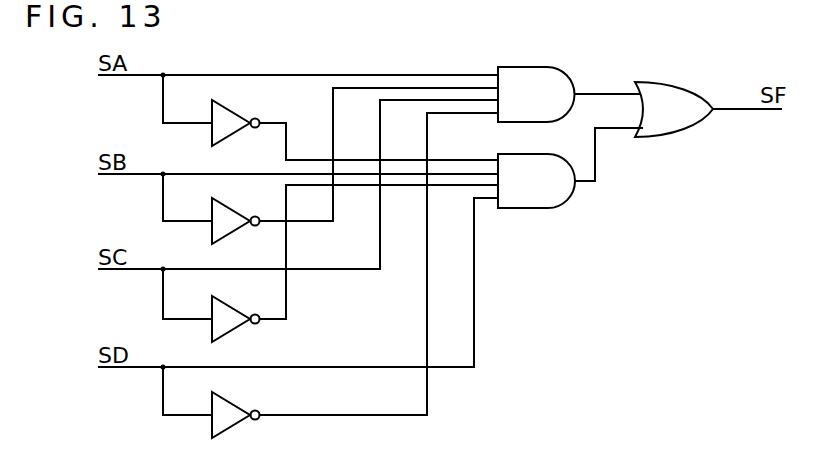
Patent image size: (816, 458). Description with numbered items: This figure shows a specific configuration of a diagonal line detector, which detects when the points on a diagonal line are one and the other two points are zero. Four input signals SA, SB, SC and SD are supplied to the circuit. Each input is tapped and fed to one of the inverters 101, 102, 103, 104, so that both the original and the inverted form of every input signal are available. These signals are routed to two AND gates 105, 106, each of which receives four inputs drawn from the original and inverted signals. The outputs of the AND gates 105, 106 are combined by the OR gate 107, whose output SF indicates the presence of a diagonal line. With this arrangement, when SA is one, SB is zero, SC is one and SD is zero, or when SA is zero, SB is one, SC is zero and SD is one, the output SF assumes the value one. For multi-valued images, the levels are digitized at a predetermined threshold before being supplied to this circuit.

The inverter 101 is at (237, 117).
The inverter 102 is at (237, 215).
The inverter 103 is at (237, 313).
The inverter 104 is at (237, 409).
The AND gate 105 is at (563, 72).
The AND gate 106 is at (560, 203).
The OR gate 107 is at (693, 83).